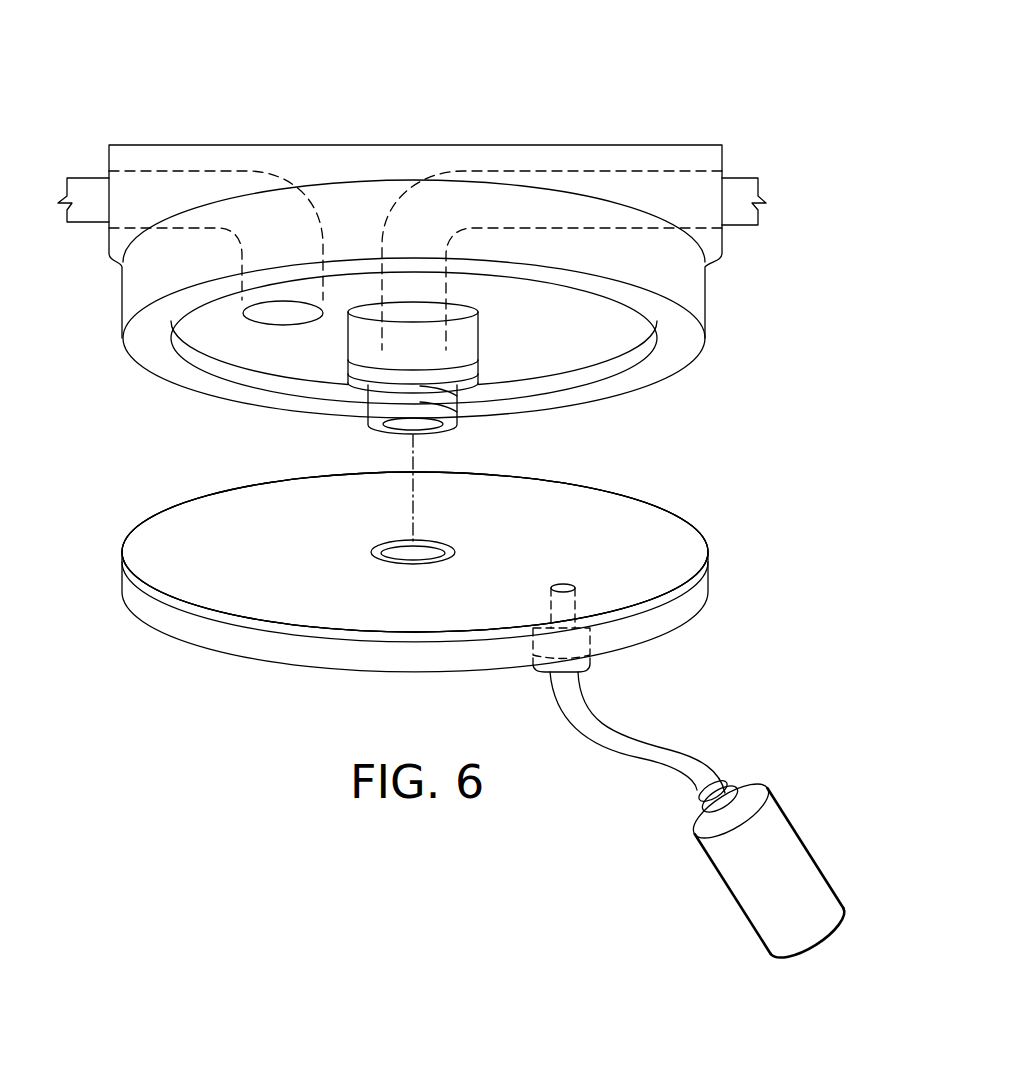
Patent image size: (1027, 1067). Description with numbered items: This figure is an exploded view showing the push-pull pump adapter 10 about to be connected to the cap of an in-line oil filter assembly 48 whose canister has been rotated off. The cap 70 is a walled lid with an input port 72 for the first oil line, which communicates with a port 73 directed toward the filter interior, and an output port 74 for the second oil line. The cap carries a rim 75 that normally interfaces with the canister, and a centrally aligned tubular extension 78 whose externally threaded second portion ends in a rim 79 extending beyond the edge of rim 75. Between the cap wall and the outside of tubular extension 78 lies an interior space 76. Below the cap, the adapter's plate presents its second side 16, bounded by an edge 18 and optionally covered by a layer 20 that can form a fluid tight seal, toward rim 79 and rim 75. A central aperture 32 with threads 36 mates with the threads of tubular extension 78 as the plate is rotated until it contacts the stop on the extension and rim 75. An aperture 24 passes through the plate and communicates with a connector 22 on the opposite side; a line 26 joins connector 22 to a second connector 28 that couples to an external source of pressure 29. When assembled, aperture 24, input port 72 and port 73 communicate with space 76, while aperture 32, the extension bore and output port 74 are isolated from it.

The in-line oil filter assembly 48 is at (590, 58).
The cap portion 70 is at (380, 145).
The input port 72 is at (108, 182).
The output port 74 is at (713, 173).
The port 73 is at (283, 325).
The rim 75 is at (680, 348).
The interior space 76 is at (218, 320).
The tubular extension 78 is at (462, 388).
The rim 79 is at (372, 425).
The push-pull pump adapter 10 is at (680, 503).
The second side 16 is at (190, 533).
The edge 18 is at (168, 620).
The layer 20 is at (310, 585).
The aperture 32 is at (440, 548).
The threads 36 is at (392, 556).
The aperture 24 is at (568, 585).
The connector 22 is at (592, 665).
The line 26 is at (630, 760).
The second connector 28 is at (748, 788).
The external source of pressure 29 is at (808, 848).